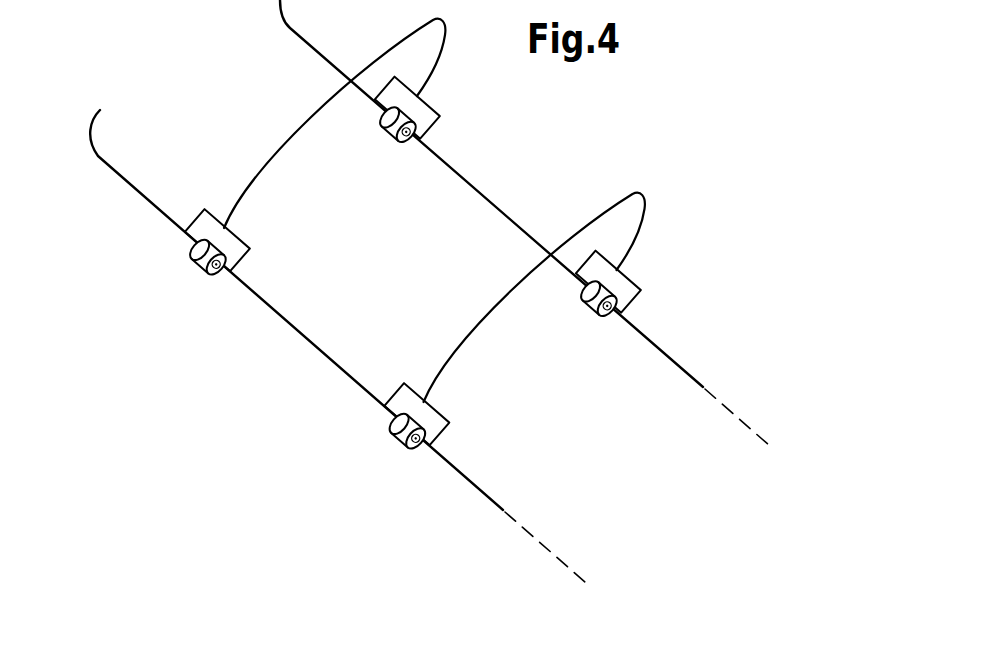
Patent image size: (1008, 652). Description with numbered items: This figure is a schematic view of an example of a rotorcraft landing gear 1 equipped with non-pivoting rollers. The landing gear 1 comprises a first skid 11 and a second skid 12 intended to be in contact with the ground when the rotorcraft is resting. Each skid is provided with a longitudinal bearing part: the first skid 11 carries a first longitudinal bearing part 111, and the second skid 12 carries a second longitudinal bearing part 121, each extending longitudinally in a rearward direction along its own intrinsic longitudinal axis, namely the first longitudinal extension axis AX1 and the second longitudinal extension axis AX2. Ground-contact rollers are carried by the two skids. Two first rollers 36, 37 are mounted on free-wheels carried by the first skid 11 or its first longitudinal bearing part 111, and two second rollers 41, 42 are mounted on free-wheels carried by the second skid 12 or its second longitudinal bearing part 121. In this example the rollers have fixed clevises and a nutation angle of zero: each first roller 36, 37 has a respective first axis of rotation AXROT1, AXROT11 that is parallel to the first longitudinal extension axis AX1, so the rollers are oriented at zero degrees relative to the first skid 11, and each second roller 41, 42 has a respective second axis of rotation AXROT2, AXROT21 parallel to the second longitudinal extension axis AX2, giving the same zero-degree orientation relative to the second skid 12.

The landing gear 1 is at (663, 133).
The first skid 11 is at (337, 354).
The first longitudinal bearing part 111 is at (279, 315).
The second skid 12 is at (581, 250).
The second longitudinal bearing part 121 is at (485, 192).
The first roller 36 is at (193, 250).
The first roller 37 is at (344, 429).
The second roller 41 is at (393, 127).
The second roller 42 is at (593, 305).
The first longitudinal extension axis AX1 is at (373, 555).
The first axis of rotation AXROT1 is at (373, 555).
The first axis of rotation AXROT11 is at (527, 530).
The second longitudinal extension axis AX2 is at (728, 444).
The second axis of rotation AXROT2 is at (728, 444).
The second axis of rotation AXROT21 is at (724, 403).